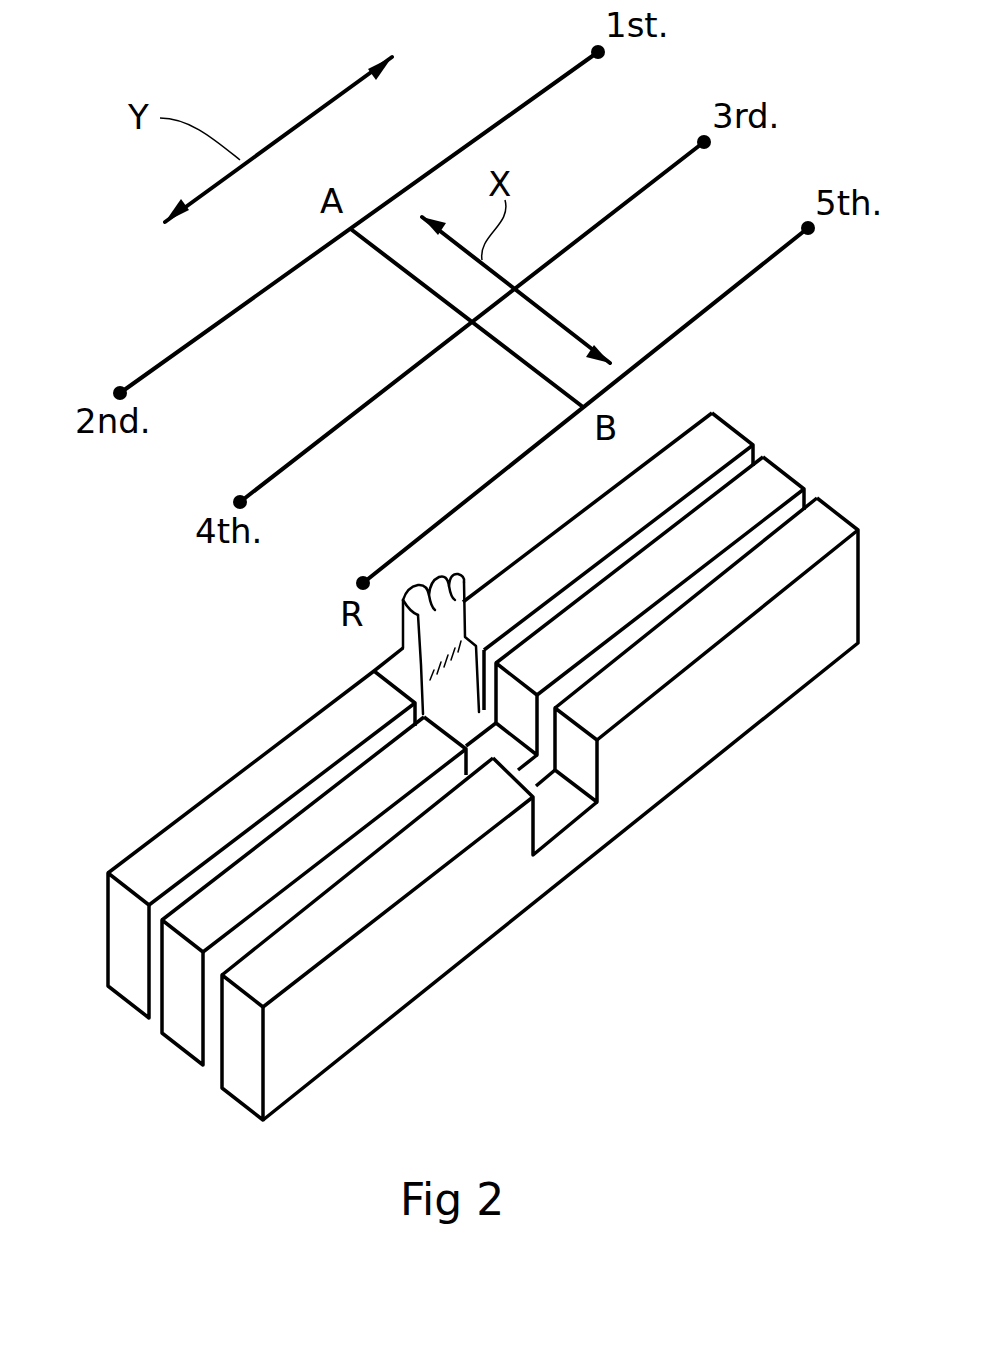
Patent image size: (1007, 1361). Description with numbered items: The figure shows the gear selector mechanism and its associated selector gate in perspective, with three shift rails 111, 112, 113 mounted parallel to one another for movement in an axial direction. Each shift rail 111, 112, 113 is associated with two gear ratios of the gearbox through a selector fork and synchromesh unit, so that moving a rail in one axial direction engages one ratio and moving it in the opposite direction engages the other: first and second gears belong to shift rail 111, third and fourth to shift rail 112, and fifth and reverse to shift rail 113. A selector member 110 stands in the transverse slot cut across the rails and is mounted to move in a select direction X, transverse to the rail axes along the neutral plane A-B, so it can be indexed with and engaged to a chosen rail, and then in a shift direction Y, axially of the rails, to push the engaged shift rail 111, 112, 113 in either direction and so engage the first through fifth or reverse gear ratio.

The selector member 110 is at (403, 645).
The shift rail 111 is at (232, 820).
The shift rail 112 is at (232, 912).
The shift rail 113 is at (475, 932).